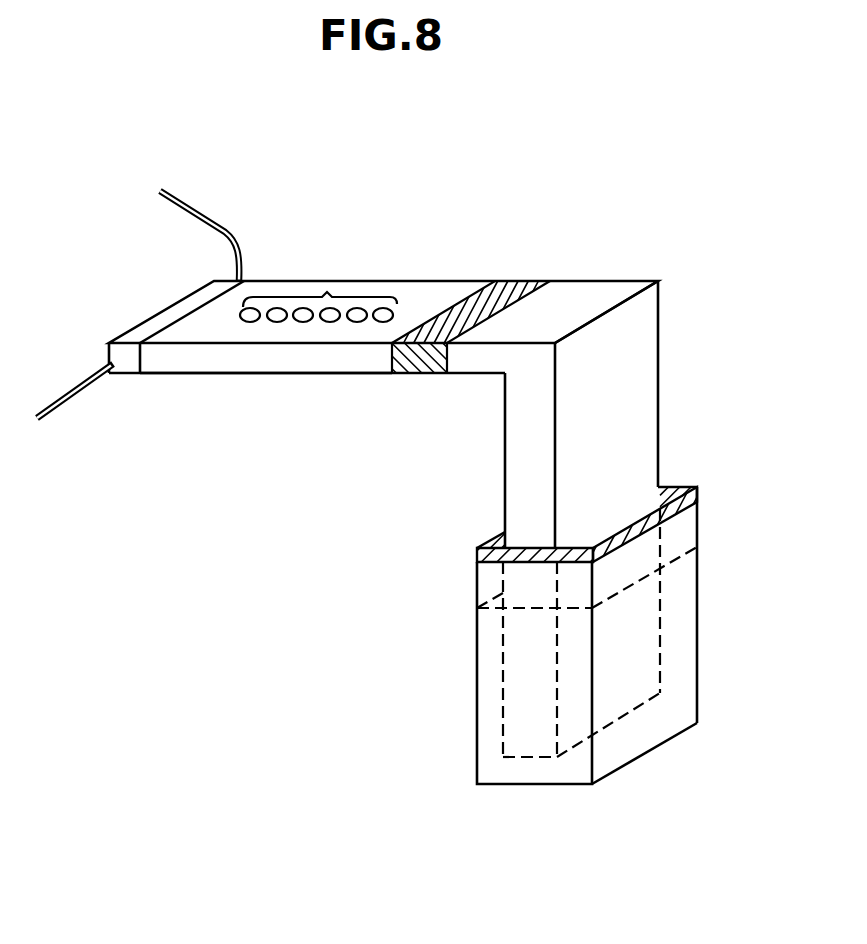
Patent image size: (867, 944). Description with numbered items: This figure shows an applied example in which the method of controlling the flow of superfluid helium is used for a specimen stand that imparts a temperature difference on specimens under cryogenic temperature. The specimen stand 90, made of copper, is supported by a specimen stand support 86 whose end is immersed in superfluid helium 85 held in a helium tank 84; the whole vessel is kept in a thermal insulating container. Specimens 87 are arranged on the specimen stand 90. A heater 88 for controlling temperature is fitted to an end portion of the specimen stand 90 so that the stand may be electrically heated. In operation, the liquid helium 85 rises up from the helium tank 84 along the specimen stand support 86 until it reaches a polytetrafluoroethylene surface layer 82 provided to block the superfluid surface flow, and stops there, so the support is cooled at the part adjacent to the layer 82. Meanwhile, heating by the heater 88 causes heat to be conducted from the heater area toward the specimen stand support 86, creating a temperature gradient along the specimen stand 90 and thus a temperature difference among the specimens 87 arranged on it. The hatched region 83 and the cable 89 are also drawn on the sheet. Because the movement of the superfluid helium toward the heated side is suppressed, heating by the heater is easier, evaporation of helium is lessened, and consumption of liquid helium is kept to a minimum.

The polytetrafluoroethylene surface layer 82 is at (518, 288).
The hatched base plate 83 is at (685, 487).
The helium tank 84 is at (476, 650).
The superfluid helium 85 is at (488, 698).
The specimen stand support 86 is at (647, 392).
The specimens 87 is at (327, 292).
The heater 88 is at (157, 323).
The cable 89 is at (215, 218).
The specimen stand 90 is at (273, 358).